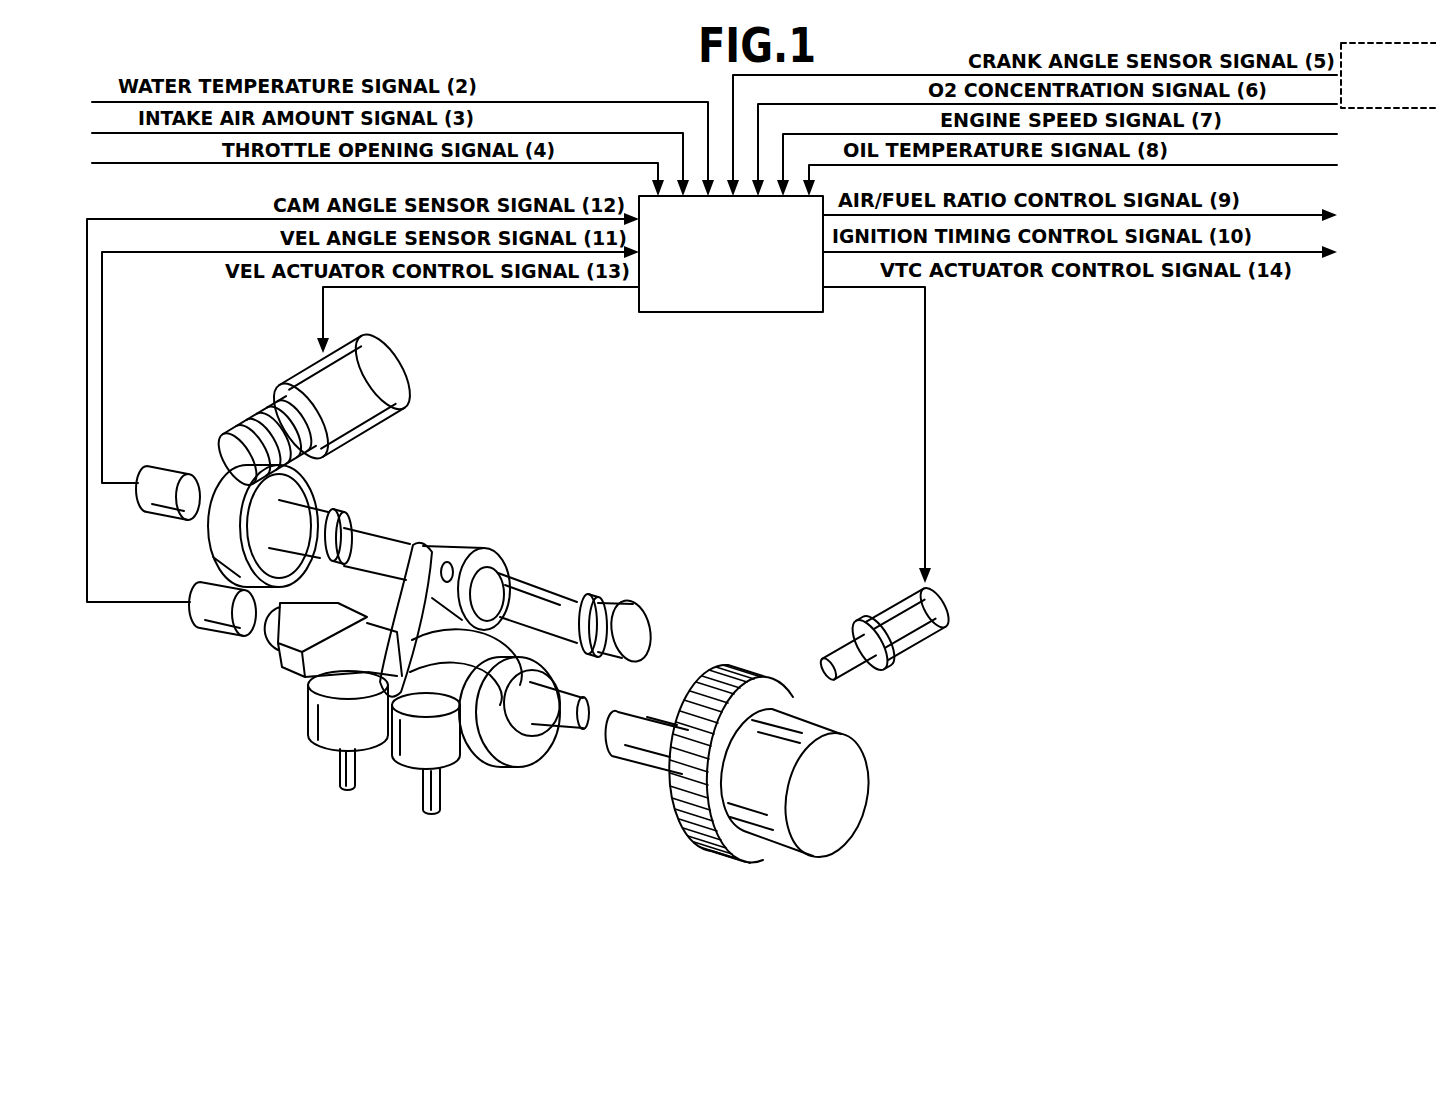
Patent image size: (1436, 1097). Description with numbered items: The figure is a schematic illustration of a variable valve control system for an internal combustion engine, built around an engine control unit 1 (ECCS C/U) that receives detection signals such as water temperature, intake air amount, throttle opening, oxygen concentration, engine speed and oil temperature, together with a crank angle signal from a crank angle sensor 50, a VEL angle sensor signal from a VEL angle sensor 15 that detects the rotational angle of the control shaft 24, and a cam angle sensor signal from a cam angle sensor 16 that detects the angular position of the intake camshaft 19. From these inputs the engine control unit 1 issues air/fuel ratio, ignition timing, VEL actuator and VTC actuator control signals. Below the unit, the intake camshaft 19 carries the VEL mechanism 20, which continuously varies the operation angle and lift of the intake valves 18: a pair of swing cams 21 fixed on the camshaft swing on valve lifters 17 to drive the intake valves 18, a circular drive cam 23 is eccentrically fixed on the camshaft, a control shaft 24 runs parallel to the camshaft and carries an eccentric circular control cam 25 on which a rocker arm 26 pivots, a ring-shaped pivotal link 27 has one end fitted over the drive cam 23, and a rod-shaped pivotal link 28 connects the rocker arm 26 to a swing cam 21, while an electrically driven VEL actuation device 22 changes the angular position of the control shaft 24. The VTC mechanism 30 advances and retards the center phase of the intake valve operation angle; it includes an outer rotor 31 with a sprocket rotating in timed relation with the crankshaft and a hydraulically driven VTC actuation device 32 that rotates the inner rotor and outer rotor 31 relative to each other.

The engine control unit 1 is at (729, 312).
The VEL angle sensor 15 is at (163, 497).
The cam angle sensor 16 is at (208, 603).
The valve lifters 17 is at (417, 743).
The intake valves 18 is at (430, 812).
The intake camshaft 19 is at (637, 740).
The valve event and lift control (VEL) mechanism 20 is at (490, 522).
The swing cams 21 is at (372, 684).
The VEL actuation device 22 is at (380, 388).
The circular drive cam 23 is at (482, 743).
The control shaft 24 is at (562, 600).
The circular control cam 25 is at (485, 615).
The rocker arm 26 is at (460, 560).
The ring-shaped pivotal link 27 is at (452, 733).
The rod-shaped pivotal link 28 is at (422, 607).
The valve timing control (VTC) mechanism 30 is at (778, 740).
The outer rotor 31 is at (727, 687).
The VTC actuation device 32 is at (897, 610).
The crank angle sensor 50 is at (1392, 108).